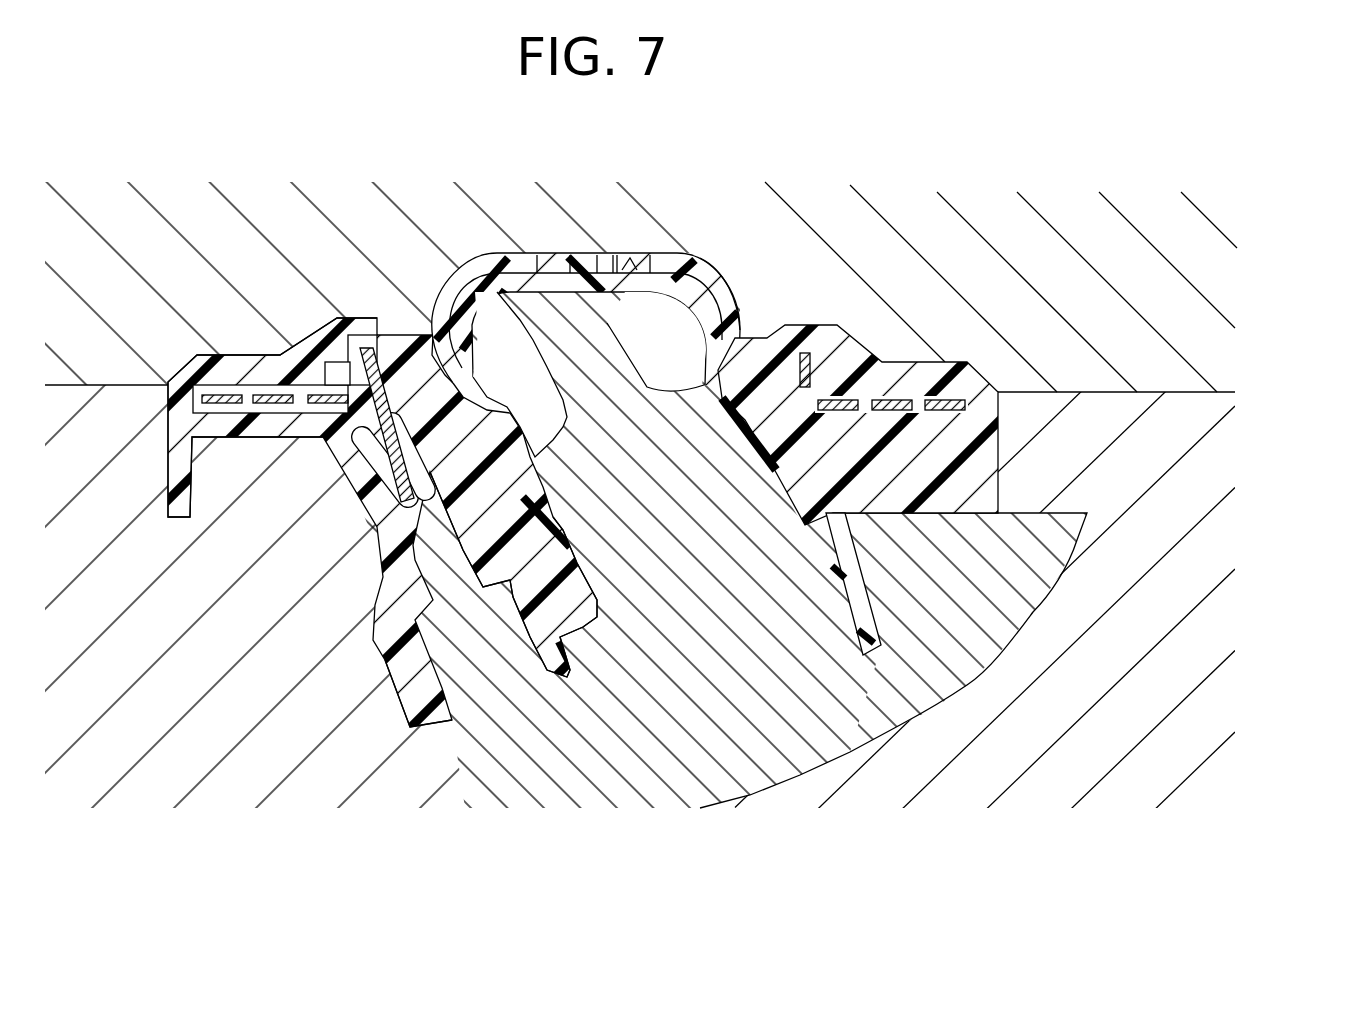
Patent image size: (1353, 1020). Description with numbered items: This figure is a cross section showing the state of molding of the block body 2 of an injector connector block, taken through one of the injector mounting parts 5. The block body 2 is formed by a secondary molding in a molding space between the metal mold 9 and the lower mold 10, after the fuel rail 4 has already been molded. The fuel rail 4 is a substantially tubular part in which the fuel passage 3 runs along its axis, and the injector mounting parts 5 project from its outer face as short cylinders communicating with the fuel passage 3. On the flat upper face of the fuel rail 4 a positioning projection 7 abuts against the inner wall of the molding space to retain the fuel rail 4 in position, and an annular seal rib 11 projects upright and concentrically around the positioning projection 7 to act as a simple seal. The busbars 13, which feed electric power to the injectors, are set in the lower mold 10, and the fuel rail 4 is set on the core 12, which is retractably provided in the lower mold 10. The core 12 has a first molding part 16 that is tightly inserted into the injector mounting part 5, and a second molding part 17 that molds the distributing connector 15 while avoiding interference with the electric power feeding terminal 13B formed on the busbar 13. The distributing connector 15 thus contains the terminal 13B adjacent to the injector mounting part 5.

The block body 2 is at (855, 358).
The fuel passage 3 is at (652, 322).
The fuel rail 4 is at (742, 320).
The injector mounting parts 5 is at (540, 613).
The positioning projections 7 is at (598, 262).
The metal mold 9 is at (1178, 302).
The lower mold 10 is at (1173, 468).
The annular seal rib 11 is at (540, 266).
The core 12 is at (806, 728).
The busbars 13 is at (228, 400).
The electric power feeding terminals 13B is at (377, 472).
The distributing connectors 15 is at (415, 708).
The first molding part 16 is at (470, 255).
The second molding part 17 is at (378, 622).